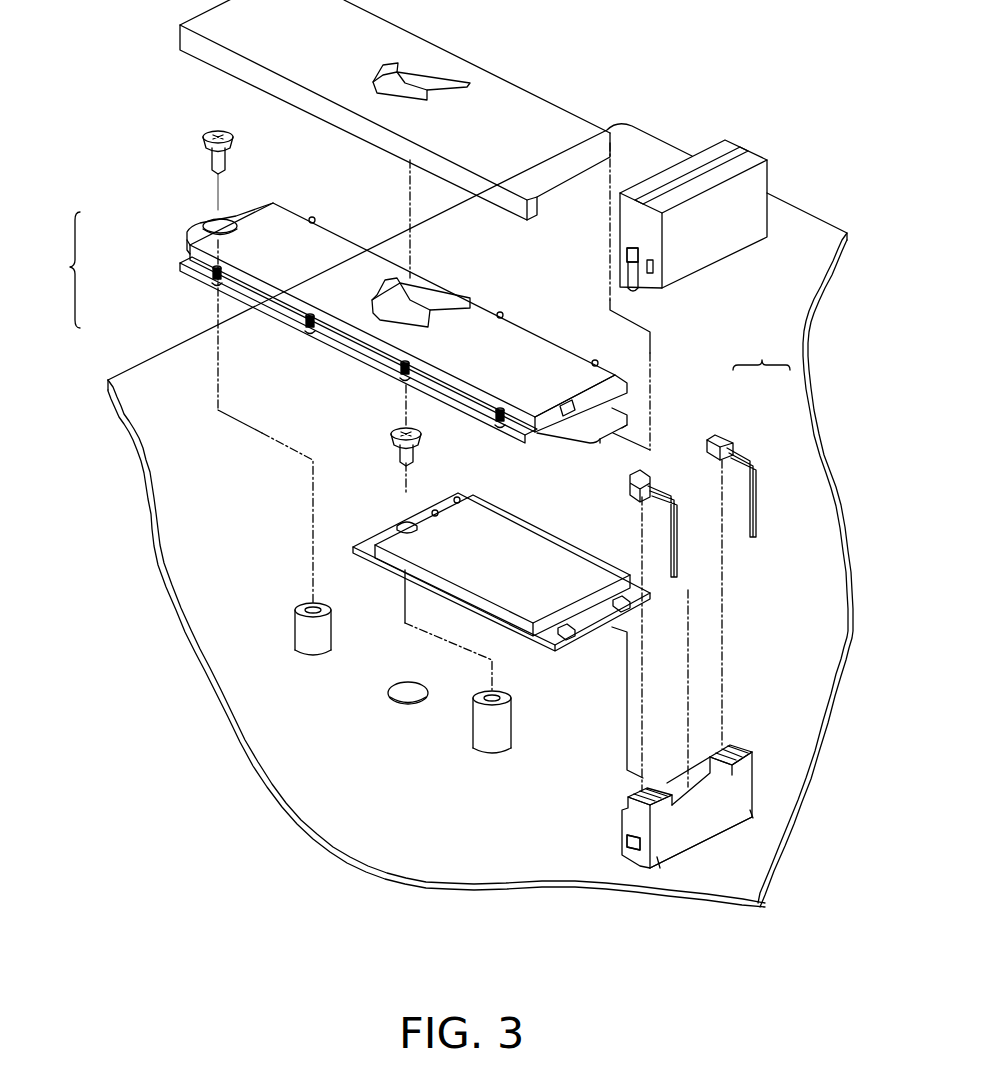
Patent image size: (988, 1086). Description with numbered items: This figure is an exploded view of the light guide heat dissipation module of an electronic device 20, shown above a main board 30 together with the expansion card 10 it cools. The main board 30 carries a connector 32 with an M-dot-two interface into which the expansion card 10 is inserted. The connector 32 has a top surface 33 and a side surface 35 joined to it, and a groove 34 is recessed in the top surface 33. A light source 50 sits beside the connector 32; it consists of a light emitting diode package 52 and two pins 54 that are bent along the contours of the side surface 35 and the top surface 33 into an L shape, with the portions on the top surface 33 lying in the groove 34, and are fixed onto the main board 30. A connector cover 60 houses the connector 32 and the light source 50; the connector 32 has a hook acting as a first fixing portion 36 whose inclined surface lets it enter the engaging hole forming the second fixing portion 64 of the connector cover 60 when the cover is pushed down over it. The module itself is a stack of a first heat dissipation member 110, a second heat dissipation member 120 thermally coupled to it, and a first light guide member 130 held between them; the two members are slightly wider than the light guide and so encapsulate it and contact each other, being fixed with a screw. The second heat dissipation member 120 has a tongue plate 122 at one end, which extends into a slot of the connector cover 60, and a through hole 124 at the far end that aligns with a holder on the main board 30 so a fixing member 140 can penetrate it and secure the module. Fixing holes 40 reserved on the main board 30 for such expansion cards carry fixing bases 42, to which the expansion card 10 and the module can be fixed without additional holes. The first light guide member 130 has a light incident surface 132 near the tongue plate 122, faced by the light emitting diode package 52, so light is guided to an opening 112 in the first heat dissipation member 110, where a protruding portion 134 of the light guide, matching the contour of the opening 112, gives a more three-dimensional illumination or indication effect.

The expansion card 10 is at (545, 547).
The electronic device 20 is at (862, 1014).
The main board 30 is at (727, 910).
The connector 32 is at (765, 771).
The top surface 33 is at (733, 747).
The groove 34 is at (640, 793).
The side surface 35 is at (693, 827).
The first fixing portion 36 is at (632, 847).
The fixing holes 40 is at (473, 743).
The fixing bases 42 is at (322, 635).
The light source 50 is at (761, 350).
The light emitting diode package 52 is at (720, 435).
The pins 54 is at (752, 460).
The connector cover 60 is at (737, 157).
The second fixing portion 64 is at (627, 265).
The first heat dissipation member 110 is at (208, 50).
The opening 112 is at (418, 72).
The second heat dissipation member 120 is at (188, 272).
The tongue plate 122 is at (588, 422).
The through hole 124 is at (212, 227).
The first light guide member 130 is at (190, 247).
The light incident surface 132 is at (568, 410).
The protruding portion 134 is at (432, 290).
The fixing member 140 is at (223, 157).